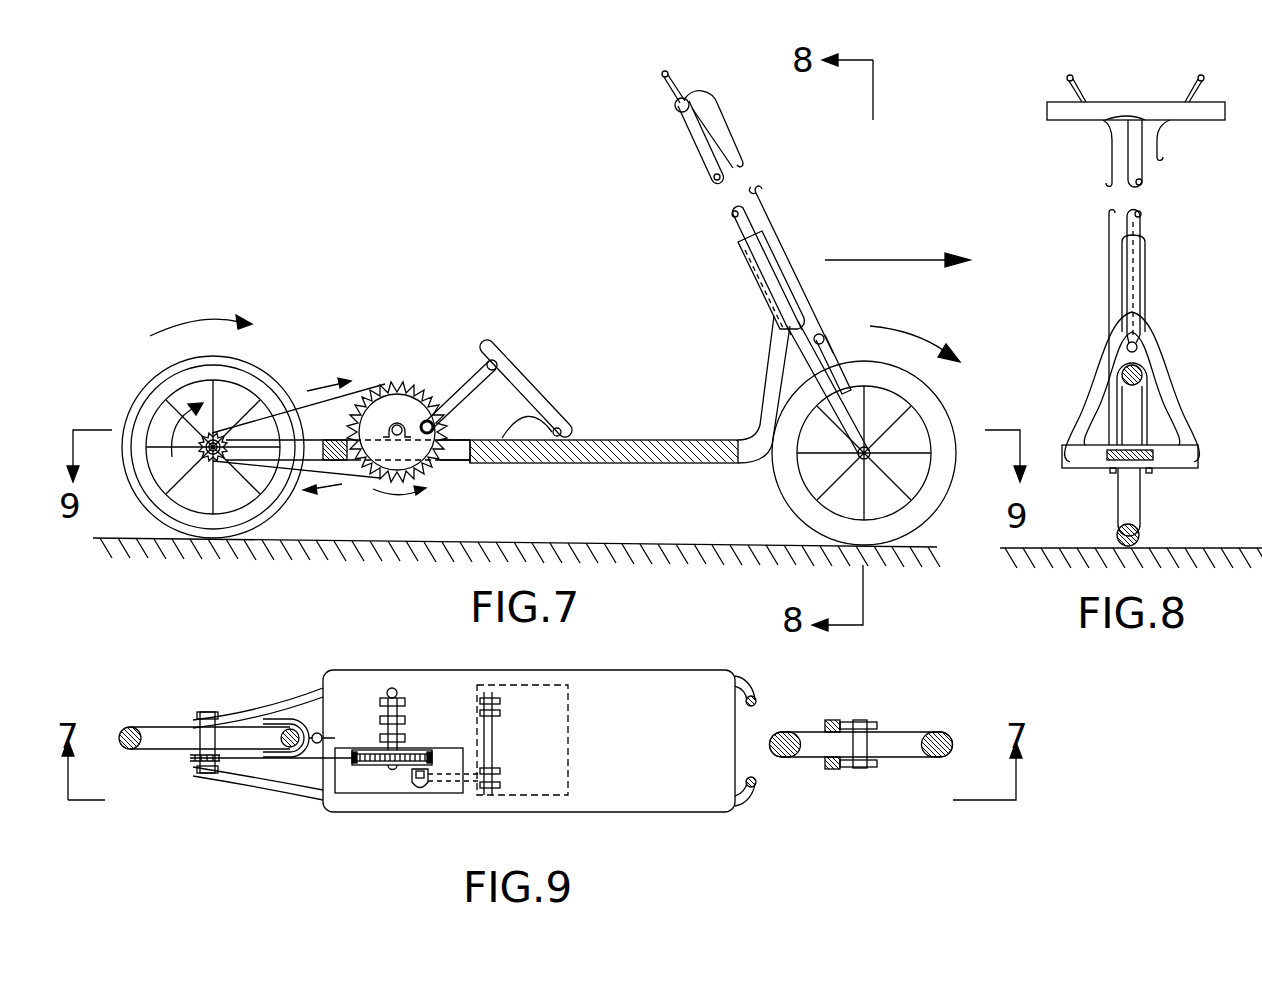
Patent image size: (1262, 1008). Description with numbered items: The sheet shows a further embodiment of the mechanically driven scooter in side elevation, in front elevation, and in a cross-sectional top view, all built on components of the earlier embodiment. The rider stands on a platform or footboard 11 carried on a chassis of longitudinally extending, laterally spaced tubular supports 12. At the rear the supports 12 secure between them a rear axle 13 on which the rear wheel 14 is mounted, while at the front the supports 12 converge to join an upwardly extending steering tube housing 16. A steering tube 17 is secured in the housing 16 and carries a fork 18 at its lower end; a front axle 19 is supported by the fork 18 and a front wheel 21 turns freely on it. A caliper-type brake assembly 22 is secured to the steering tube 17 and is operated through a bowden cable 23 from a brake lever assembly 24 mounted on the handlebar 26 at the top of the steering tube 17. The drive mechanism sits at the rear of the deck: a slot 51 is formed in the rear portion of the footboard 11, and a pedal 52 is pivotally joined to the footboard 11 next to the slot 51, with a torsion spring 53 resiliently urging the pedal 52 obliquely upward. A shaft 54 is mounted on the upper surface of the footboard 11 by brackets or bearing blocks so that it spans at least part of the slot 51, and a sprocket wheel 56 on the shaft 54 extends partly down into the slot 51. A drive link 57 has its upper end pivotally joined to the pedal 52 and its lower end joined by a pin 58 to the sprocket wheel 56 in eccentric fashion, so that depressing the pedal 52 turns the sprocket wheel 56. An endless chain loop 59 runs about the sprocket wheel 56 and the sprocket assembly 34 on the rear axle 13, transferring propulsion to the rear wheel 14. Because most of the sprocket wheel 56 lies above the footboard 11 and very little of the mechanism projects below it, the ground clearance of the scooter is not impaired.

In FIG. 7, the footboard 11 is at (678, 440).
In FIG. 7, the tubular supports 12 is at (219, 437).
In FIG. 9, the tubular supports 12 is at (255, 712).
In FIG. 9, the rear axle 13 is at (200, 743).
In FIG. 7, the rear wheel 14 is at (153, 378).
In FIG. 9, the rear wheel 14 is at (122, 730).
In FIG. 7, the steering tube housing 16 is at (777, 225).
In FIG. 8, the steering tube housing 16 is at (1147, 272).
In FIG. 7, the steering tube 17 is at (697, 147).
In FIG. 8, the steering tube 17 is at (1143, 177).
In FIG. 9, the fork 18 is at (832, 720).
In FIG. 8, the front axle 19 is at (1128, 470).
In FIG. 9, the front axle 19 is at (867, 744).
In FIG. 7, the front wheel 21 is at (782, 493).
In FIG. 8, the front wheel 21 is at (1138, 530).
In FIG. 9, the front wheel 21 is at (912, 730).
In FIG. 7, the brake assembly 22 is at (825, 358).
In FIG. 8, the brake assembly 22 is at (1152, 371).
In FIG. 7, the bowden cable 23 is at (717, 117).
In FIG. 8, the bowden cable 23 is at (1110, 162).
In FIG. 7, the brake lever assembly 24 is at (669, 73).
In FIG. 8, the brake lever assembly 24 is at (1083, 90).
In FIG. 7, the handlebar 26 is at (674, 106).
In FIG. 8, the handlebar 26 is at (1145, 102).
In FIG. 7, the sprocket assembly 34 is at (177, 453).
In FIG. 9, the sprocket assembly 34 is at (190, 758).
In FIG. 7, the slot 51 is at (460, 452).
In FIG. 9, the slot 51 is at (371, 793).
In FIG. 7, the pedal 52 is at (515, 362).
In FIG. 9, the pedal 52 is at (570, 750).
In FIG. 7, the torsion spring 53 is at (512, 457).
In FIG. 7, the shaft 54 is at (402, 423).
In FIG. 9, the shaft 54 is at (390, 692).
In FIG. 7, the sprocket wheel 56 is at (397, 383).
In FIG. 9, the sprocket wheel 56 is at (436, 750).
In FIG. 7, the drive link 57 is at (478, 366).
In FIG. 9, the drive link 57 is at (448, 778).
In FIG. 7, the pin 58 is at (429, 435).
In FIG. 9, the pin 58 is at (421, 790).
In FIG. 7, the endless chain loop 59 is at (222, 452).
In FIG. 9, the endless chain loop 59 is at (325, 744).